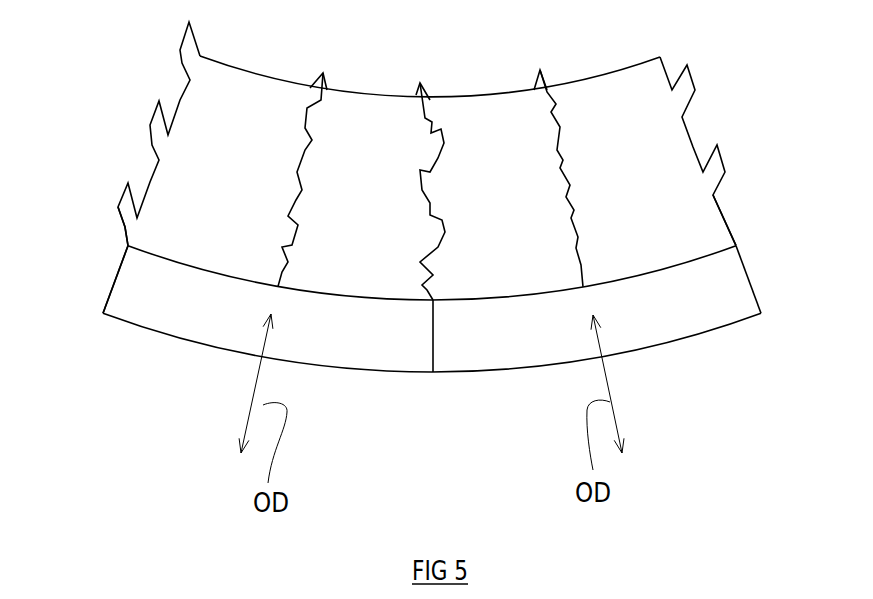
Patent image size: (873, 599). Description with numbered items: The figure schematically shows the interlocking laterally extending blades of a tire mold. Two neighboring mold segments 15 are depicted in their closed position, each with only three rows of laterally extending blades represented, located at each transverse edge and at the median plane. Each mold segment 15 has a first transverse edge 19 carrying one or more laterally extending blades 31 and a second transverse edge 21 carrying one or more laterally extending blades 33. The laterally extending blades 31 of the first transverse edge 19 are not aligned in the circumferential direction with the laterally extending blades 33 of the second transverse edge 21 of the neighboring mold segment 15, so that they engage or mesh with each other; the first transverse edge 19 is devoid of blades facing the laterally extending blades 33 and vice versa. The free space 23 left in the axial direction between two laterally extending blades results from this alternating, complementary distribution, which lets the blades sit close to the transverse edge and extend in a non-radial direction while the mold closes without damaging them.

The mold segment 15 is at (173, 313).
The first transverse edge 19 is at (722, 132).
The second transverse edge 21 is at (131, 157).
The free space 23 is at (170, 89).
The laterally extending blades 31 is at (738, 191).
The laterally extending blades 33 is at (110, 235).